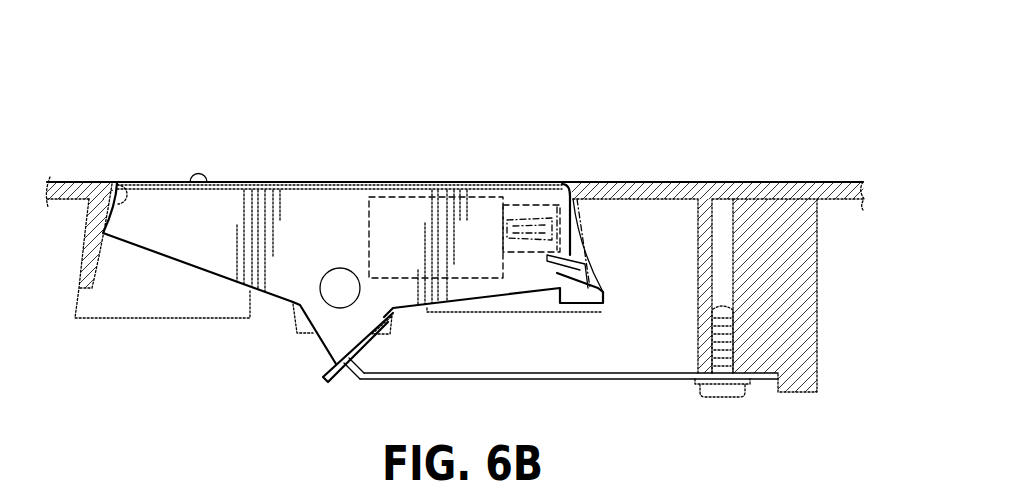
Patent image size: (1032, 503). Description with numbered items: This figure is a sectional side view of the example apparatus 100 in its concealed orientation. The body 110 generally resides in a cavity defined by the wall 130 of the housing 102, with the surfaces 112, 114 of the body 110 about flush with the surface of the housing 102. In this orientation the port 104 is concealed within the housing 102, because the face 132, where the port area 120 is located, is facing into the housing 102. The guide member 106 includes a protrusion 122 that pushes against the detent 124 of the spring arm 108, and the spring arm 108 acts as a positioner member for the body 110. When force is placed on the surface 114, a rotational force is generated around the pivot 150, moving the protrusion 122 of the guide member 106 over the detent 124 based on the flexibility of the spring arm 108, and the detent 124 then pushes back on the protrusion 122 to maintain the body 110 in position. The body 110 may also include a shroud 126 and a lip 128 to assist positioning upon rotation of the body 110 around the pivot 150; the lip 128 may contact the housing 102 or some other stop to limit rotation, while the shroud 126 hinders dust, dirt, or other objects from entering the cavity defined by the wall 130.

The apparatus 100 is at (507, 100).
The housing 102 is at (772, 182).
The port 104 is at (531, 205).
The guide member 106 is at (306, 351).
The spring arm 108 is at (577, 385).
The body 110 is at (326, 182).
The surface 112 is at (462, 182).
The surface 114 is at (225, 181).
The port area 120 is at (575, 229).
The protrusion 122 is at (366, 344).
The detent 124 is at (347, 373).
The shroud 126 is at (580, 268).
The lip 128 is at (603, 297).
The wall 130 is at (132, 192).
The face 132 is at (579, 203).
The pivot 150 is at (340, 267).